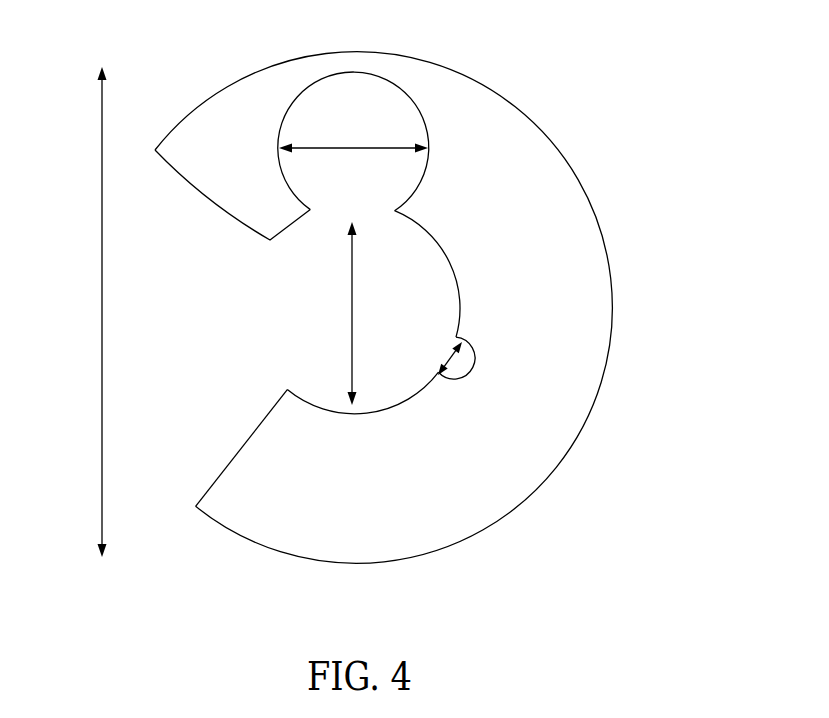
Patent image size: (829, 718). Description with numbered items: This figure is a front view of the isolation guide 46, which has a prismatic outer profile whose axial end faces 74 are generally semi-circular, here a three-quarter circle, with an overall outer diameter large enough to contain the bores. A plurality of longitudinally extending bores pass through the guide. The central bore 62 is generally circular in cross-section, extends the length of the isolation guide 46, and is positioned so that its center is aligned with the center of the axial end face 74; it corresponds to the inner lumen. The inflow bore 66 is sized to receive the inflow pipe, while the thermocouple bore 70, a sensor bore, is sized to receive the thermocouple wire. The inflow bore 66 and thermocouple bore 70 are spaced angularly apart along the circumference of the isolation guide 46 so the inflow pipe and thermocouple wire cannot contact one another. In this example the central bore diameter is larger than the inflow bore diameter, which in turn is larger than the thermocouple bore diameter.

The isolation guide 46 is at (384, 290).
The central bore 62 is at (447, 240).
The inflow bore 66 is at (403, 77).
The thermocouple bore 70 is at (483, 367).
The axial end faces 74 is at (593, 328).